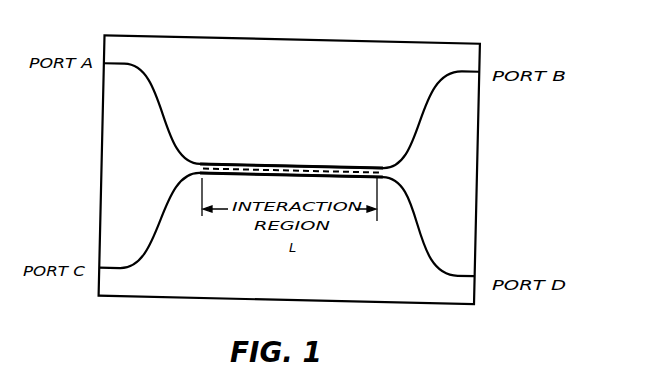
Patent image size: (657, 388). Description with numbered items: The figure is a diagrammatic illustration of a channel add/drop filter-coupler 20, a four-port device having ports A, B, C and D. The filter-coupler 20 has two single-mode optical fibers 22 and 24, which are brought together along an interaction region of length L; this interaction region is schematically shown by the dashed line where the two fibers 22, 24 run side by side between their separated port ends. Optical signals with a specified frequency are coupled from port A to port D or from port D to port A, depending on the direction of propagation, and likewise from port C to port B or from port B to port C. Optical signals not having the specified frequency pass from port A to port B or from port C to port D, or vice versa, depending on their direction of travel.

The channel add/drop filter-coupler 20 is at (331, 37).
The single-mode optical fiber 22 is at (122, 66).
The single-mode optical fiber 24 is at (112, 263).